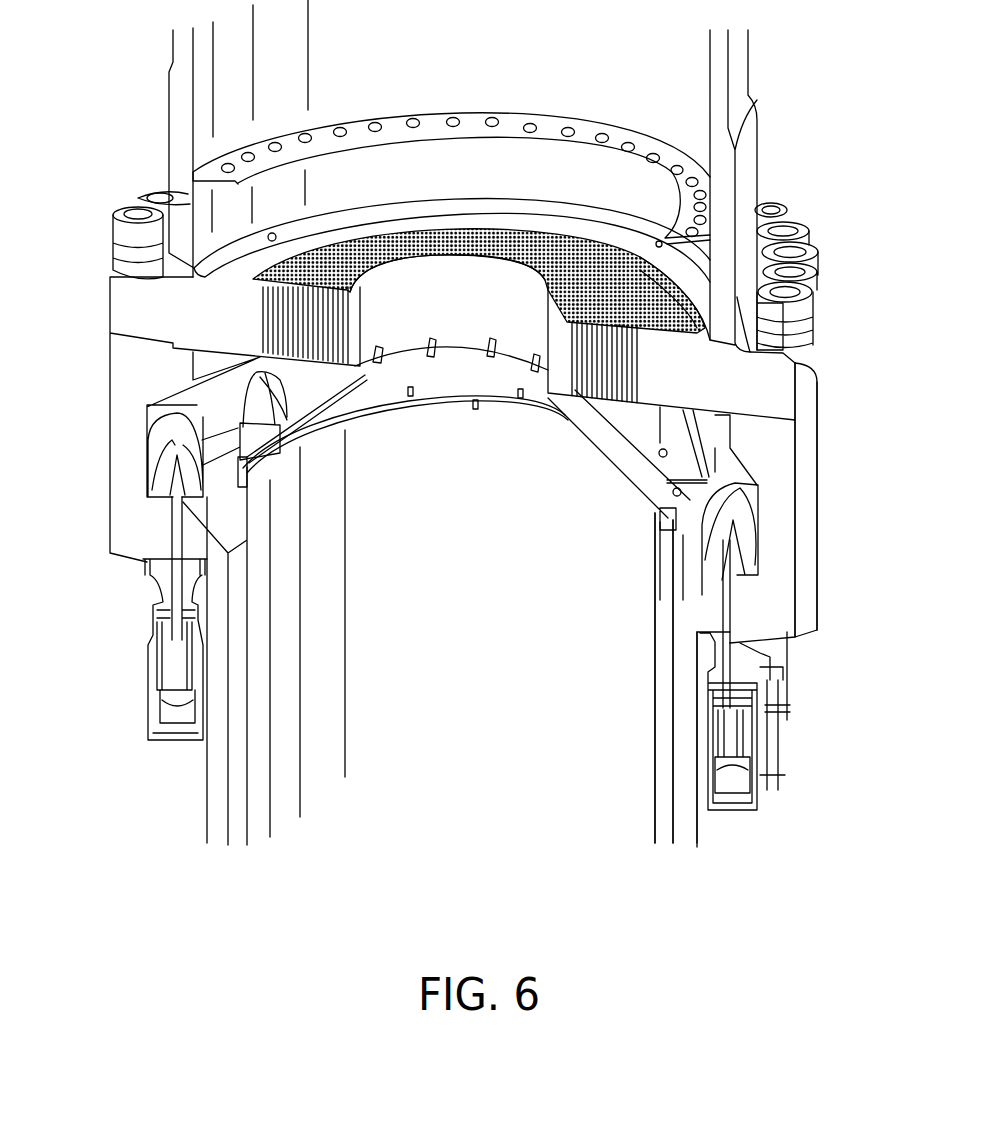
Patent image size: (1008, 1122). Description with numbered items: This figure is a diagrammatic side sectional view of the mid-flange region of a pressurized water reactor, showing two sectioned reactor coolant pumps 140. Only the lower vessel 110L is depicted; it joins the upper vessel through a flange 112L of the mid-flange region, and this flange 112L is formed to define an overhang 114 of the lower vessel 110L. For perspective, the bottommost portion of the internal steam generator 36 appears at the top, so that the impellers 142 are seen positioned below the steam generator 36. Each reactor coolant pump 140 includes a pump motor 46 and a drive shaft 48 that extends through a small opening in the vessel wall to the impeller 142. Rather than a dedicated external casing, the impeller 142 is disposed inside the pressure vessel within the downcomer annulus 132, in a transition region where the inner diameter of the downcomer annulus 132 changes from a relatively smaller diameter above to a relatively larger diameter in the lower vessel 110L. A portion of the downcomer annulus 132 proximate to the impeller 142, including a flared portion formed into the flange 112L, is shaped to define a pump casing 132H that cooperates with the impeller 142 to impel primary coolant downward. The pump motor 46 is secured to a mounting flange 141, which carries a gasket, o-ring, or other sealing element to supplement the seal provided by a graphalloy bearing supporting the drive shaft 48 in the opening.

The internal steam generator 36 is at (287, 323).
The pump casing 132H is at (147, 407).
The mounting flange 141 is at (150, 587).
The downcomer annulus 132 is at (262, 790).
The flange 112L is at (807, 477).
The impeller 142 is at (750, 527).
The drive shaft 48 is at (730, 603).
The overhang 114 is at (795, 653).
The reactor coolant pump 140 is at (802, 714).
The pump motor 46 is at (747, 748).
The lower vessel 110L is at (703, 830).